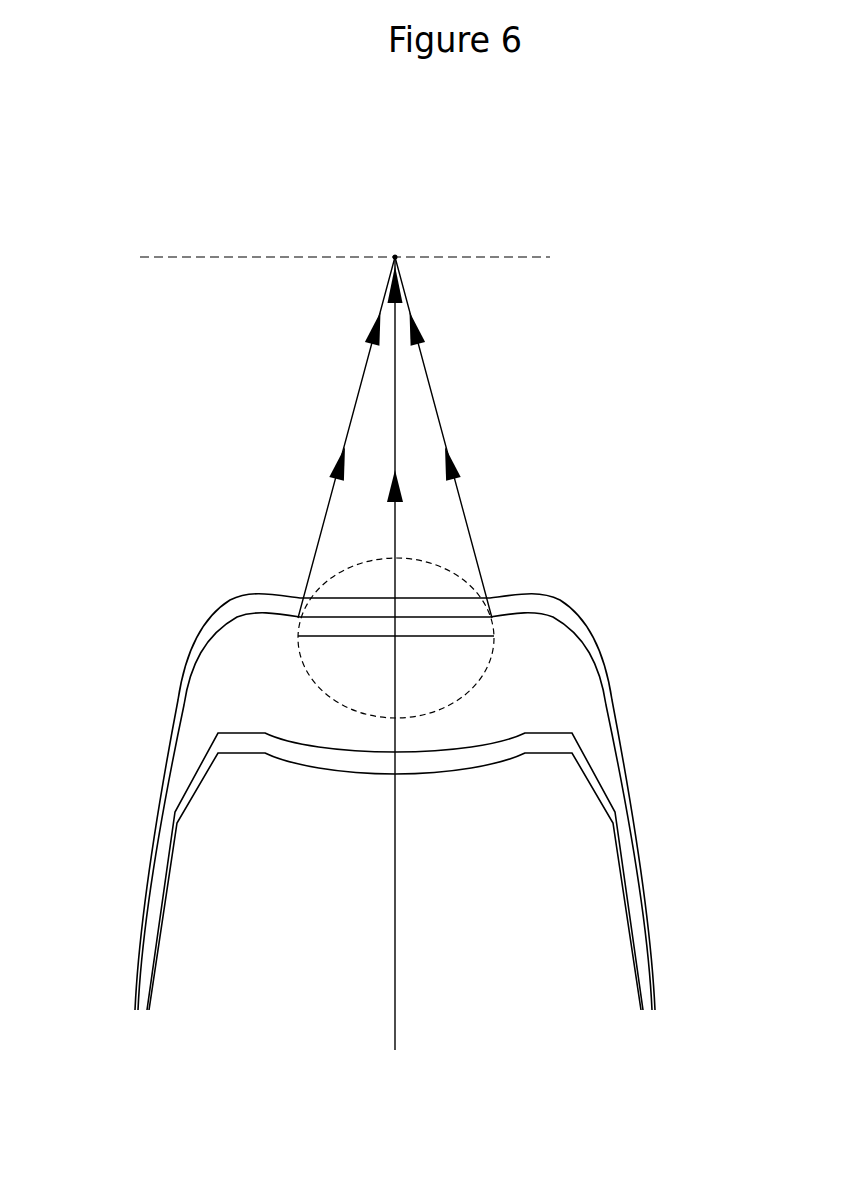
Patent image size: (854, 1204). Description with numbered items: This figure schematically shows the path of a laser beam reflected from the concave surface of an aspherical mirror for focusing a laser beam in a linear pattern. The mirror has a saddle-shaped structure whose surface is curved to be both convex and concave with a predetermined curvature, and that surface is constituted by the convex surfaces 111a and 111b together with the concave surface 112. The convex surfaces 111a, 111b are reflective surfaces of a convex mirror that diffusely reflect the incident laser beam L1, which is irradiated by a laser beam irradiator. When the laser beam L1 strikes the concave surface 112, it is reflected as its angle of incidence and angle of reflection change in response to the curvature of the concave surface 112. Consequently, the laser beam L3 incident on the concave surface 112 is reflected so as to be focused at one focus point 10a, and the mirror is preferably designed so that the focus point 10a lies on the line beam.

The focus point 10a is at (395, 255).
The laser beam L3 is at (458, 497).
The convex surface 111b is at (225, 600).
The convex surface 111a is at (578, 609).
The laser beam L1 is at (310, 680).
The concave surface 112 is at (395, 611).